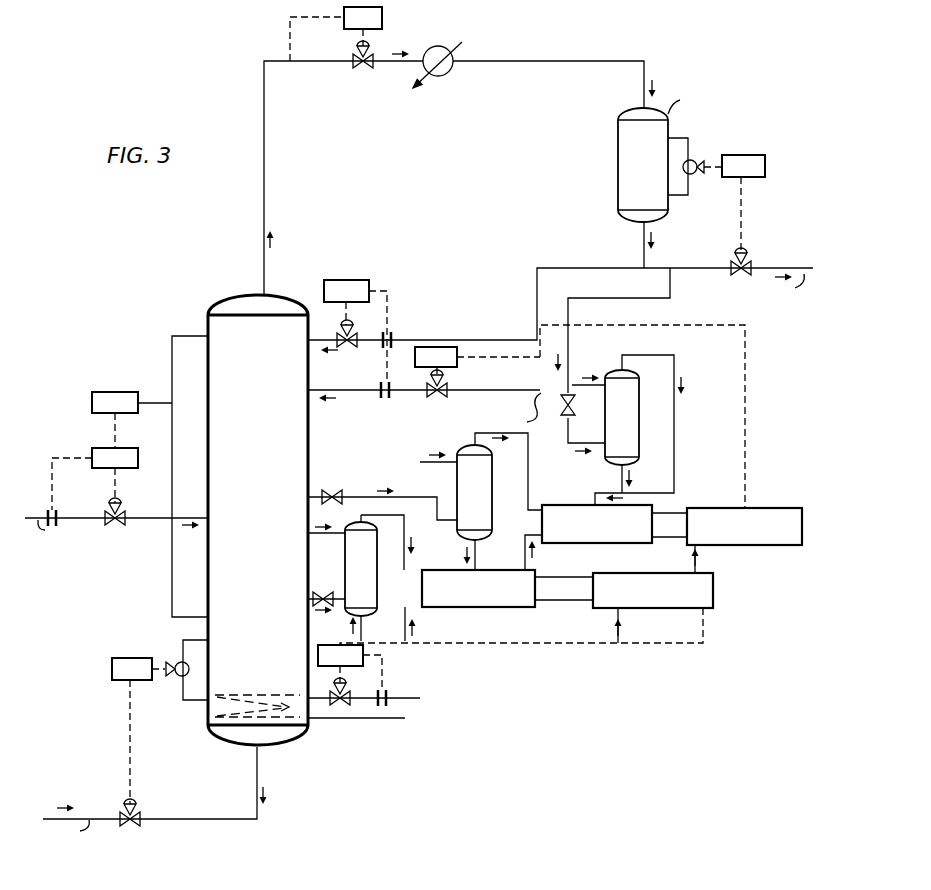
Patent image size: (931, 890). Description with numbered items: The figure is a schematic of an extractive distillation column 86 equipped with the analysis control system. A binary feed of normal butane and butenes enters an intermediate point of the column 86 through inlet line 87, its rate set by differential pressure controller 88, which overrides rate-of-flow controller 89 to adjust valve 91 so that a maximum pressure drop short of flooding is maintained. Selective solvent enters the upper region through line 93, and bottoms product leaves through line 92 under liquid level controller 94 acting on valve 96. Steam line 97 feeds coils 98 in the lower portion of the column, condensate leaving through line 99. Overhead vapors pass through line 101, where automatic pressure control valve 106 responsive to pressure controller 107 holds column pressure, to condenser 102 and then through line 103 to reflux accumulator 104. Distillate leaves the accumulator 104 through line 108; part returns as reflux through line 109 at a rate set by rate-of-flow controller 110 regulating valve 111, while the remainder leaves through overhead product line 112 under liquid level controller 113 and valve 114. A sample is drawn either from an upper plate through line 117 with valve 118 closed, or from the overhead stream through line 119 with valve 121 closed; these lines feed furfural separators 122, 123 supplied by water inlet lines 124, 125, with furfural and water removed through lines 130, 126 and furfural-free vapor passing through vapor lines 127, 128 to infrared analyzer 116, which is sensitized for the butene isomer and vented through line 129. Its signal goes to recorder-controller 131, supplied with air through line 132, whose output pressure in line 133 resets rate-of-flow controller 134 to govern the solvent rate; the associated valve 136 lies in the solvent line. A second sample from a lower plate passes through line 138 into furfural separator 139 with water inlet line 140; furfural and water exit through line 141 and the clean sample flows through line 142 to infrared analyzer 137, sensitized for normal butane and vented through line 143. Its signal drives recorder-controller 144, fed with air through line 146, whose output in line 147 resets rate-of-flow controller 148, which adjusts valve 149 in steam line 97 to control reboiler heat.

The column 86 is at (308, 432).
The inlet line 87 is at (140, 518).
The differential pressure controller 88 is at (120, 392).
The rate-of-flow controller 89 is at (138, 459).
The valve 91 is at (120, 505).
The line 92 is at (210, 819).
The line 93 is at (362, 390).
The liquid level controller 94 is at (113, 680).
The valve 96 is at (143, 811).
The steam line 97 is at (323, 698).
The coils 98 is at (262, 694).
The line 99 is at (393, 718).
The line 101 is at (266, 54).
The condenser 102 is at (440, 47).
The line 103 is at (642, 84).
The reflux accumulator 104 is at (618, 126).
The automatic pressure control valve 106 is at (352, 54).
The pressure controller 107 is at (382, 19).
The line 108 is at (641, 252).
The line 109 is at (606, 268).
The rate-of-flow controller 110 is at (368, 280).
The valve 111 is at (355, 347).
The overhead product line 112 is at (779, 268).
The liquid level controller 113 is at (750, 155).
The valve 114 is at (747, 256).
The infrared analyzer 116 is at (642, 544).
The line 117 is at (312, 498).
The valve 118 is at (572, 408).
The line 119 is at (569, 440).
The valve 121 is at (343, 498).
The furfural separator 122 is at (492, 510).
The furfural separator 123 is at (639, 452).
The water inlet line 124 is at (442, 462).
The water inlet line 125 is at (573, 385).
The line 126 is at (620, 470).
The vapor line 127 is at (528, 478).
The vapor line 128 is at (674, 470).
The line 129 is at (523, 553).
The line 130 is at (478, 553).
The recorder-controller 131 is at (768, 546).
The line 132 is at (703, 548).
The line 133 is at (747, 468).
The rate-of-flow controller 134 is at (457, 364).
The solvent control valve 136 is at (449, 387).
The infrared analyzer 137 is at (457, 609).
The line 138 is at (312, 583).
The furfural separator 139 is at (345, 580).
The water inlet line 140 is at (341, 536).
The line 141 is at (363, 622).
The line 142 is at (405, 518).
The line 143 is at (412, 618).
The recorder-controller 144 is at (656, 610).
The line 146 is at (612, 612).
The line 147 is at (705, 636).
The rate-of-flow controller 148 is at (363, 655).
The valve 149 is at (335, 704).